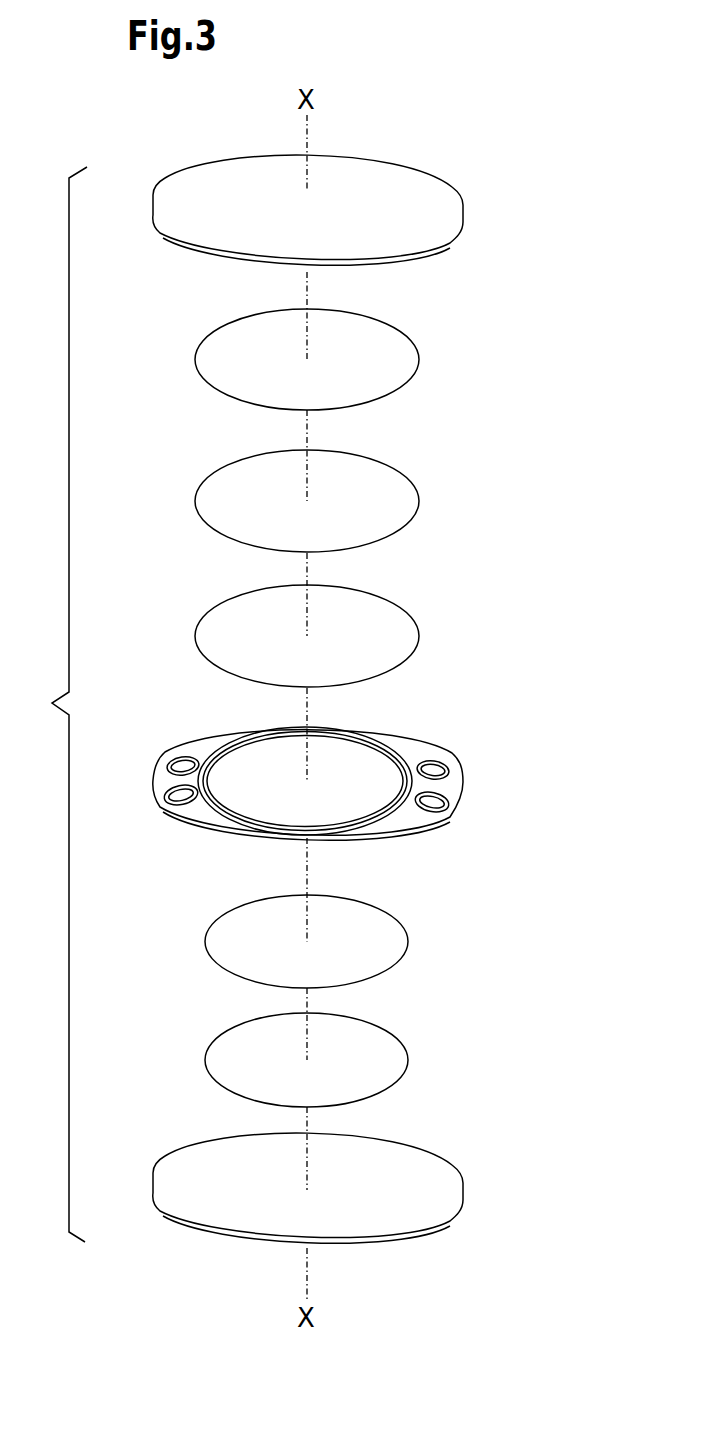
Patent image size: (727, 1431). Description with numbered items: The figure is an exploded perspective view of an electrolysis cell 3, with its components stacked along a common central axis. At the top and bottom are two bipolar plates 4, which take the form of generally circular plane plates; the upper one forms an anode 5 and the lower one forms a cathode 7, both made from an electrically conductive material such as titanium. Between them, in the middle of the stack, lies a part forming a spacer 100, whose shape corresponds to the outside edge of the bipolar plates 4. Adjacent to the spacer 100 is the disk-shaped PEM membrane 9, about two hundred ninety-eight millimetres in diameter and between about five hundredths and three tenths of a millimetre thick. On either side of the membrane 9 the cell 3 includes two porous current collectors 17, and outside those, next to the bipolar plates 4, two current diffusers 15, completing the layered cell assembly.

The electrolysis cell 3 is at (57, 704).
The bipolar plate 4 is at (372, 683).
The anode 5 is at (403, 170).
The cathode 7 is at (425, 1178).
The PEM membrane 9 is at (437, 620).
The current diffuser 15 is at (435, 347).
The porous current collector 17 is at (437, 487).
The spacer 100 is at (488, 762).